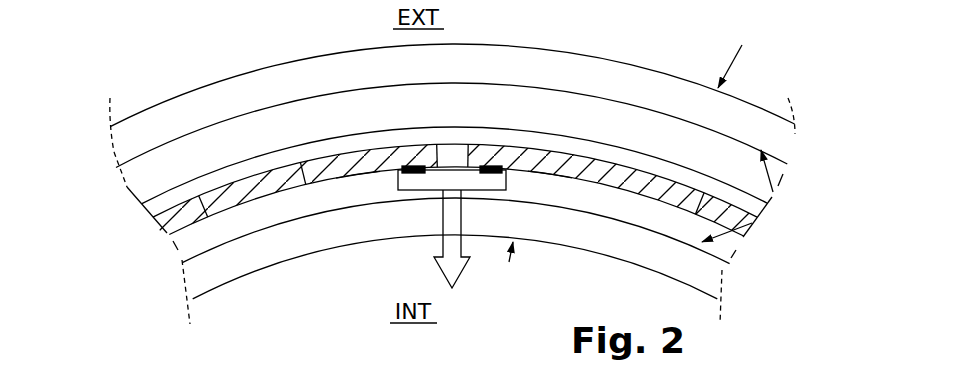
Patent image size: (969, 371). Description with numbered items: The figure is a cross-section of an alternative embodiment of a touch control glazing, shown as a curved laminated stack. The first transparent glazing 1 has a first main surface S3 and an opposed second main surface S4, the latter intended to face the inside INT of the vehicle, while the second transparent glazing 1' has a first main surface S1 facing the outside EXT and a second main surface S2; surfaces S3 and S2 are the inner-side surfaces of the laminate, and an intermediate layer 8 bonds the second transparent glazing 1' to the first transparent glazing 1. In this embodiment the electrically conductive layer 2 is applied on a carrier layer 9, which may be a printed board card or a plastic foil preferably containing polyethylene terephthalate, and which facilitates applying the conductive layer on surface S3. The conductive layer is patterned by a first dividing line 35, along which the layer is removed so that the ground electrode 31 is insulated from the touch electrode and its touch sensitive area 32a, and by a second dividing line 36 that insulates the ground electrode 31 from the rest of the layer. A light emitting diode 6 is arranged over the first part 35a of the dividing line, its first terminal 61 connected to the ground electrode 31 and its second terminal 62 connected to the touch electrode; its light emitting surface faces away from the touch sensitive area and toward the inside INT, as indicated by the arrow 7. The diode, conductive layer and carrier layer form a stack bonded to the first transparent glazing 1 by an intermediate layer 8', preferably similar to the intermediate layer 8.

The first transparent glazing 1 is at (455, 285).
The second transparent glazing 1' is at (418, 93).
The electrically conductive layer 2 is at (160, 220).
The light emitting diode 6 is at (497, 182).
The arrow 7 is at (443, 218).
The intermediate layer 8 is at (409, 134).
The intermediate layer 8' is at (422, 248).
The carrier layer 9 is at (150, 206).
The ground electrode 31 is at (550, 163).
The touch sensitive area 32a is at (358, 165).
The first dividing line 35 is at (320, 163).
The first part of the dividing line 35a is at (452, 152).
The second dividing line 36 is at (195, 205).
The first terminal 61 is at (493, 162).
The second terminal 62 is at (413, 165).
The surface S1 is at (742, 45).
The surface S2 is at (773, 192).
The surface S3 is at (752, 223).
The surface S4 is at (509, 262).